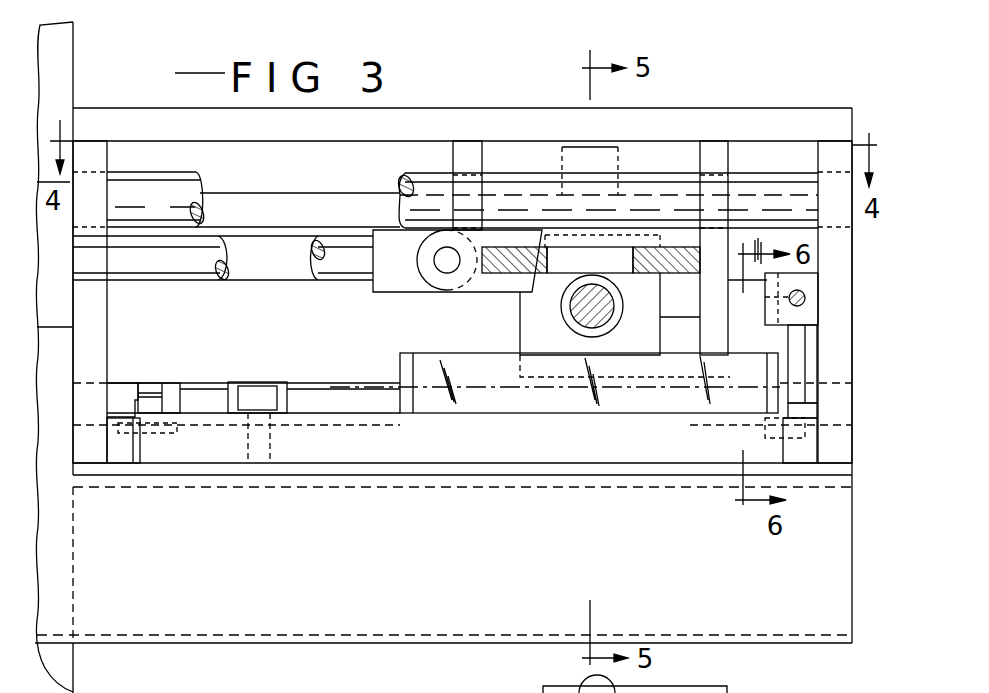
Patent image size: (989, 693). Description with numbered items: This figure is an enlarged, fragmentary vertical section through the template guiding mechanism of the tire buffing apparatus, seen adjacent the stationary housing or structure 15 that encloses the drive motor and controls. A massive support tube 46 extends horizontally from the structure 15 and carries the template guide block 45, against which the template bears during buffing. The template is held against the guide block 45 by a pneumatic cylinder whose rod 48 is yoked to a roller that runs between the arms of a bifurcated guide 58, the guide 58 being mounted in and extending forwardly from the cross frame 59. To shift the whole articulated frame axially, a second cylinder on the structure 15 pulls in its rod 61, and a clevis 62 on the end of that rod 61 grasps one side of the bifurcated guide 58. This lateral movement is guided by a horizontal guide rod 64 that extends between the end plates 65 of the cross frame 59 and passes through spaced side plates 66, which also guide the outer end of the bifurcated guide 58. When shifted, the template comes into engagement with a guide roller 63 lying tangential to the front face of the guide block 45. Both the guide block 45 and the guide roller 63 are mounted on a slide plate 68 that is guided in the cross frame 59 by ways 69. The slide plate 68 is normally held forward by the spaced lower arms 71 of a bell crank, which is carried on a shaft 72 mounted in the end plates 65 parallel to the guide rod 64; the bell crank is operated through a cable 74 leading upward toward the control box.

The stationary housing or structure 15 is at (80, 54).
The template guide block 45 is at (563, 415).
The support tube 46 is at (343, 647).
The rod 48 is at (563, 308).
The bifurcated guide 58 is at (622, 264).
The cross frame 59 is at (826, 94).
The rod 61 is at (190, 287).
The clevis 62 is at (462, 295).
The guide roller 63 is at (252, 383).
The horizontal guide rod 64 is at (203, 180).
The end plates 65 is at (107, 165).
The side plates 66 is at (453, 158).
The slide plate 68 is at (405, 472).
The ways 69 is at (138, 473).
The lower arms 71 is at (170, 383).
The shaft 72 is at (358, 385).
The cable 74 is at (803, 306).